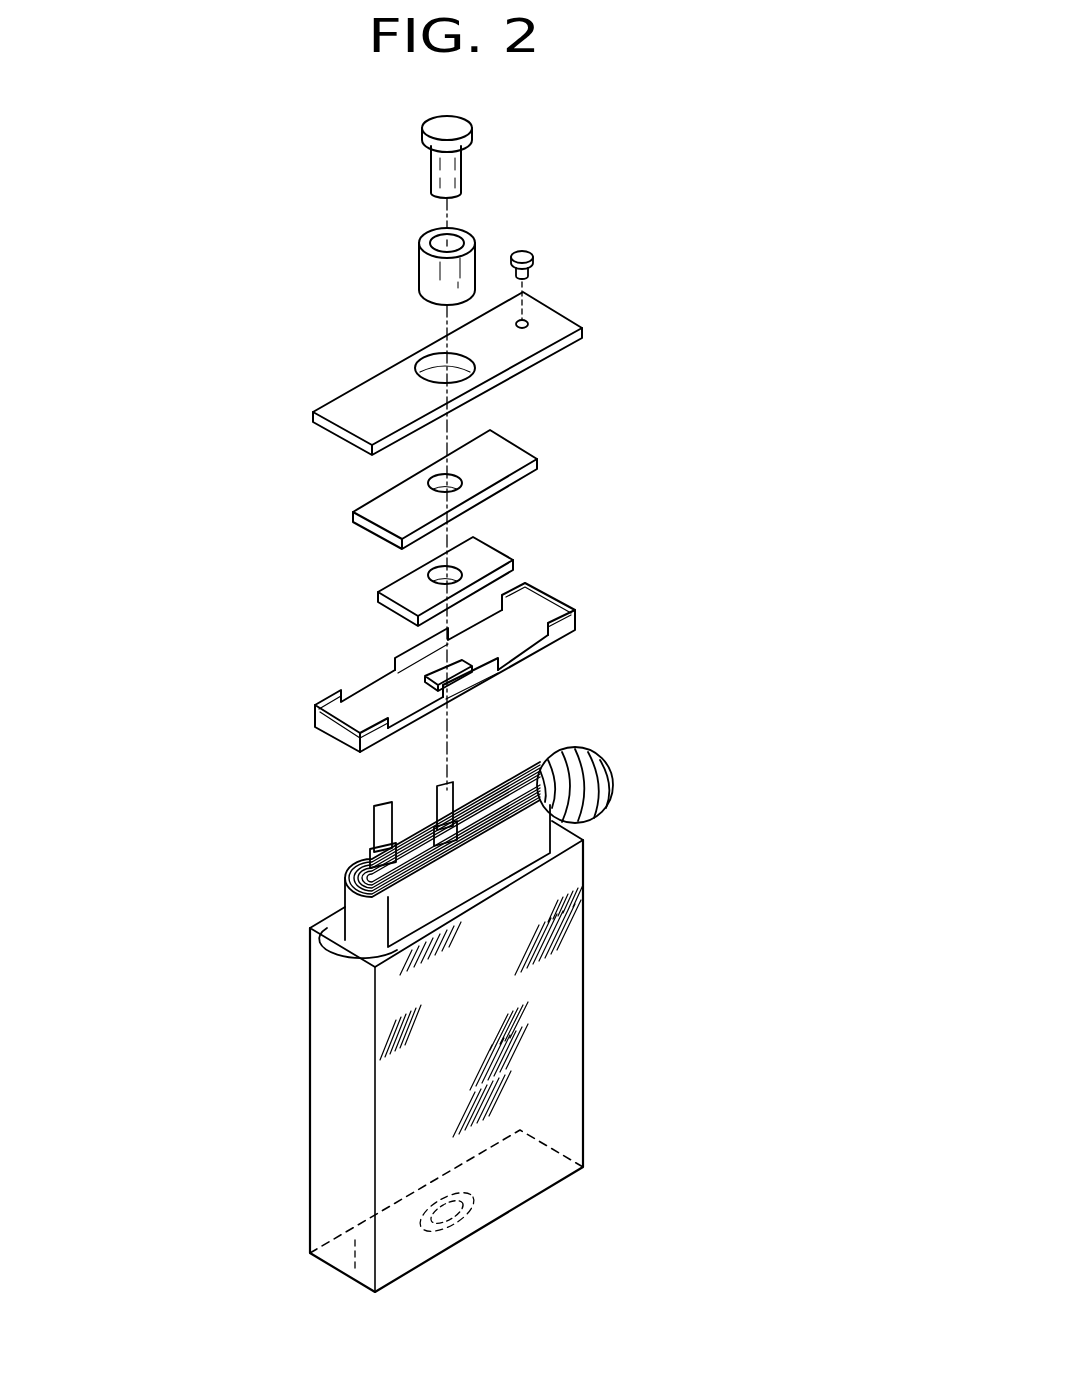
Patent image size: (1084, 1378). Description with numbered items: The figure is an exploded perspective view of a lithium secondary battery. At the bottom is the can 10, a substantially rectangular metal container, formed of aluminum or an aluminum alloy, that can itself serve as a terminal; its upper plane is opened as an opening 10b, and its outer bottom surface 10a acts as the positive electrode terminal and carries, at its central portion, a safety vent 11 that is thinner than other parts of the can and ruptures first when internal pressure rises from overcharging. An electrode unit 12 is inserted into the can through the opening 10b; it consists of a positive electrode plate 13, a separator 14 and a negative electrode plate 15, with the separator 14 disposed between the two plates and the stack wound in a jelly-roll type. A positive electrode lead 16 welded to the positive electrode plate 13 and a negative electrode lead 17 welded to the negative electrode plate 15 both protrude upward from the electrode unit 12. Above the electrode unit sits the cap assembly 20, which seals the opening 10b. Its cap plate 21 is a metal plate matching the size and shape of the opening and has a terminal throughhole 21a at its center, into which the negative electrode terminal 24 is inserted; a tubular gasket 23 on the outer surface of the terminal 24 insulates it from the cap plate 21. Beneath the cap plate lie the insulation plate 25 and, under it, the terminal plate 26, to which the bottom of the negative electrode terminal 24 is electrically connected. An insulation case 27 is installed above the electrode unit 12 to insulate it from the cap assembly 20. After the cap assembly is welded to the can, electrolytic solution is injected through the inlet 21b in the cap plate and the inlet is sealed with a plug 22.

The can 10 is at (572, 1047).
The bottom surface of the can 10a is at (356, 1272).
The opening 10b is at (560, 836).
The safety vent 11 is at (447, 1215).
The electrode unit 12 is at (645, 692).
The positive electrode plate 13 is at (597, 790).
The separator 14 is at (583, 776).
The negative electrode plate 15 is at (556, 760).
The positive electrode lead 16 is at (381, 810).
The negative electrode lead 17 is at (458, 790).
The cap assembly 20 is at (603, 320).
The cap plate 21 is at (346, 408).
The terminal throughhole 21a is at (438, 373).
The inlet 21b is at (534, 318).
The plug 22 is at (530, 250).
The tubular gasket 23 is at (421, 272).
The negative electrode terminal 24 is at (437, 168).
The insulation plate 25 is at (518, 456).
The terminal plate 26 is at (498, 556).
The insulation case 27 is at (556, 601).